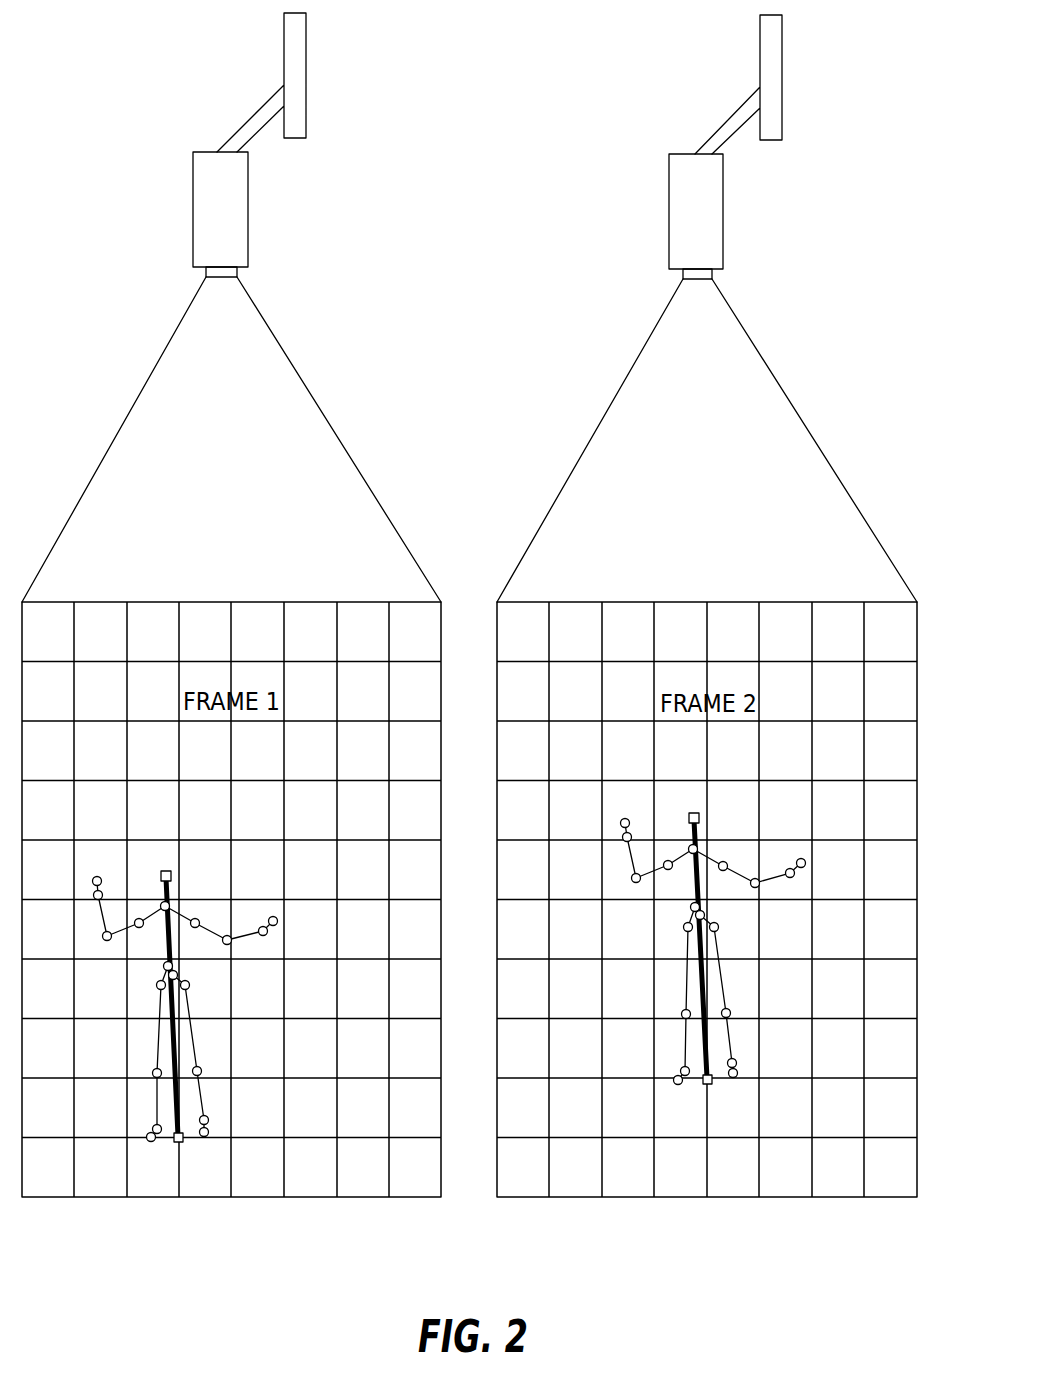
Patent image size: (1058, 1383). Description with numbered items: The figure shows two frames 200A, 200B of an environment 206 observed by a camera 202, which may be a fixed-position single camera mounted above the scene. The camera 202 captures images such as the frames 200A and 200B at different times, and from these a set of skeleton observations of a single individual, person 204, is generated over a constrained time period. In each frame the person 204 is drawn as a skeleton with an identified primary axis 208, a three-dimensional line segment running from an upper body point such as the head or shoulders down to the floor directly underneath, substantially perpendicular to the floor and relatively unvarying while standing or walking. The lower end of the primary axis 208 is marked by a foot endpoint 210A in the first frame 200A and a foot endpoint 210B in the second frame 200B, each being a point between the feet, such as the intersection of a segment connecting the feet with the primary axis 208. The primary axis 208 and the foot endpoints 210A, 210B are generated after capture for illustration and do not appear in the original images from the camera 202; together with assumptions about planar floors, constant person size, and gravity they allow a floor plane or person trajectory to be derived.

The frame 200A is at (342, 293).
The frame 200B is at (812, 295).
The camera 202 is at (248, 250).
The person 204 is at (464, 977).
The environment 206 is at (340, 440).
The primary axis 208 is at (177, 1083).
The foot endpoint 210A is at (180, 1140).
The foot endpoint 210B is at (710, 1083).